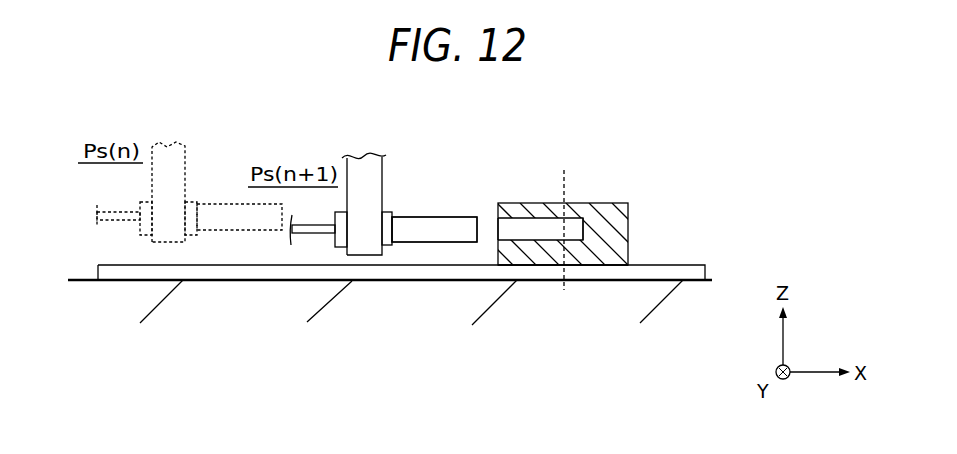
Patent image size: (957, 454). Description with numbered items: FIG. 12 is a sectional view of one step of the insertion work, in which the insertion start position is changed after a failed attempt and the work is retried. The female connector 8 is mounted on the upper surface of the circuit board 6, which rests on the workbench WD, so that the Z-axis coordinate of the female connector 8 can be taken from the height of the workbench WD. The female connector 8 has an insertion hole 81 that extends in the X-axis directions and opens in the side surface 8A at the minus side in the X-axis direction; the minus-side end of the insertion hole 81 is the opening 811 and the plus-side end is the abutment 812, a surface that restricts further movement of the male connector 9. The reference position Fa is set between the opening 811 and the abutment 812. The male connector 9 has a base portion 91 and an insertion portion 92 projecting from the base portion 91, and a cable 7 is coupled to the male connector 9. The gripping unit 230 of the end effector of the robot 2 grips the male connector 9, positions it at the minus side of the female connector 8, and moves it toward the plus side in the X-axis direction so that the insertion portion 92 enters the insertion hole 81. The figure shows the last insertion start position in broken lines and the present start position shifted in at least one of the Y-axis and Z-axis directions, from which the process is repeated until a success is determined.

The circuit board 6 is at (119, 259).
The cable 7 is at (312, 236).
The male connector 9 is at (415, 208).
The base portion 91 is at (343, 230).
The insertion portion 92 is at (435, 227).
The gripping unit 230 is at (363, 173).
The robot 2 is at (379, 176).
The female connector 8 is at (624, 194).
The insertion hole 81 is at (520, 227).
The opening 811 is at (500, 233).
The abutment 812 is at (583, 228).
The side surface 8A is at (500, 246).
The reference position Fa is at (562, 220).
The workbench WD is at (190, 305).